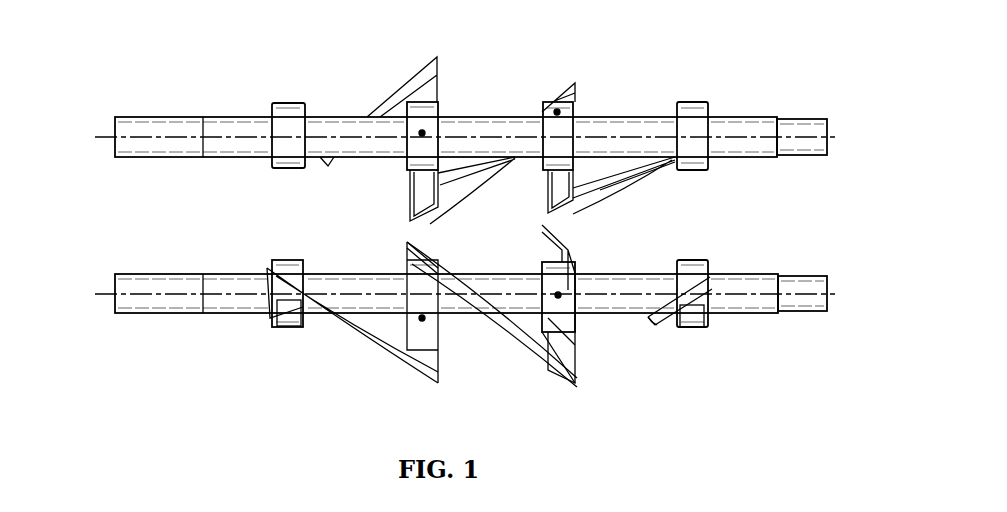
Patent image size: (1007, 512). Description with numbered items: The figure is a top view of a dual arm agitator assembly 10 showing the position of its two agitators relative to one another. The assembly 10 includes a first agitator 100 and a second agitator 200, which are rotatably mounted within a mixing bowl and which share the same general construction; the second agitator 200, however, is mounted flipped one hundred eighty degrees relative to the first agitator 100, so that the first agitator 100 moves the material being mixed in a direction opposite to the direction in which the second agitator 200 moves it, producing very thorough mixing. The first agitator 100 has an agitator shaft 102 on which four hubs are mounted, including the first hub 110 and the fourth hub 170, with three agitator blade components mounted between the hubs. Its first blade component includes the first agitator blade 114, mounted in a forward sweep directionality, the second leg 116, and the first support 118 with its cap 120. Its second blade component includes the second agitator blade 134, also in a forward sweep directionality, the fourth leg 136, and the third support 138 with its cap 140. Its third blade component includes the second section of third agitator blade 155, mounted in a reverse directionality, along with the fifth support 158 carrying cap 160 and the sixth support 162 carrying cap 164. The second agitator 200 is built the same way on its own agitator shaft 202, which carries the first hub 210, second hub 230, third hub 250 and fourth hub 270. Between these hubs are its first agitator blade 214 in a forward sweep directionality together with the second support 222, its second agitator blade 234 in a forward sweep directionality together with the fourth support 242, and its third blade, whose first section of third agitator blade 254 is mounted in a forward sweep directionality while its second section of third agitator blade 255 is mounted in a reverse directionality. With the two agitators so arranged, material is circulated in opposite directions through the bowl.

The dual agitator assembly 10 is at (118, 217).
The first agitator 100 is at (112, 374).
The agitator shaft 102 is at (170, 315).
The first hub 110 is at (290, 260).
The first agitator blade 114 is at (347, 362).
The second leg 116 is at (443, 336).
The first support 118 is at (291, 326).
The cap 120 is at (273, 320).
The second agitator blade 134 is at (523, 360).
The fourth leg 136 is at (576, 330).
The third support 138 is at (392, 285).
The cap 140 is at (407, 270).
The second section of third agitator blade 155 is at (663, 318).
The fifth support 158 is at (545, 272).
The cap 160 is at (542, 250).
The sixth support 162 is at (700, 314).
The cap 164 is at (718, 300).
The fourth hub 170 is at (705, 260).
The second agitator 200 is at (148, 72).
The agitator shaft 202 is at (800, 118).
The first hub 210 is at (695, 102).
The first agitator blade 214 is at (657, 178).
The second support 222 is at (598, 205).
The second hub 230 is at (582, 118).
The second agitator blade 234 is at (560, 100).
The fourth support 242 is at (443, 186).
The third hub 250 is at (432, 113).
The first section of third agitator blade 254 is at (398, 82).
The second section of third agitator blade 255 is at (330, 160).
The fourth hub 270 is at (289, 103).